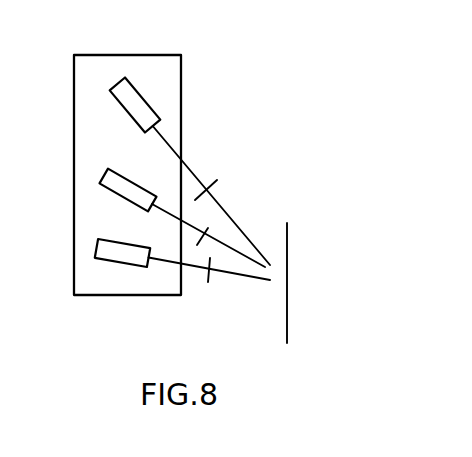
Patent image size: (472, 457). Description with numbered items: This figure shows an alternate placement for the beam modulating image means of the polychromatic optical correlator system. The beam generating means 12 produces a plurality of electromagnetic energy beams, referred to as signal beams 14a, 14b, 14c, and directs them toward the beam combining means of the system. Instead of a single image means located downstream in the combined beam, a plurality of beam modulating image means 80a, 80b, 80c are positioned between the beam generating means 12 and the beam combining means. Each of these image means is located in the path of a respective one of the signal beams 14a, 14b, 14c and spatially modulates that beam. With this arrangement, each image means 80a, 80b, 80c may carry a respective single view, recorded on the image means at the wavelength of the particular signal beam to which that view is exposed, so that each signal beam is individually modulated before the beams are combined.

The beam generating means 12 is at (153, 55).
The signal beam 14a is at (188, 168).
The signal beam 14b is at (250, 272).
The signal beam 14c is at (223, 270).
The beam modulating image means 80a is at (215, 180).
The beam modulating image means 80b is at (207, 227).
The beam modulating image means 80c is at (207, 283).